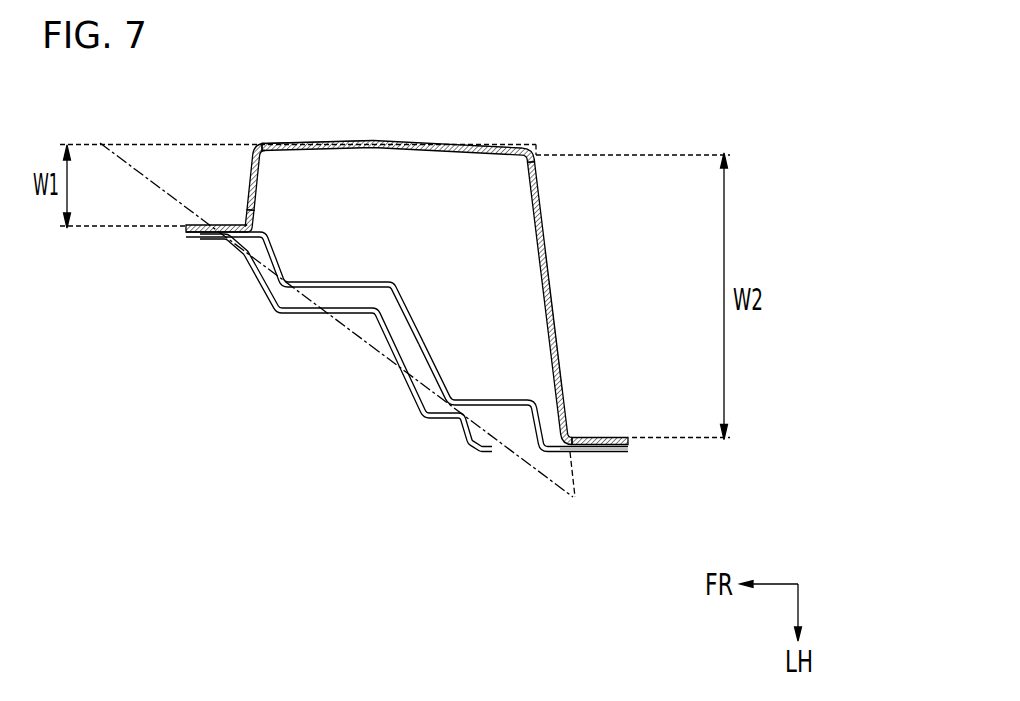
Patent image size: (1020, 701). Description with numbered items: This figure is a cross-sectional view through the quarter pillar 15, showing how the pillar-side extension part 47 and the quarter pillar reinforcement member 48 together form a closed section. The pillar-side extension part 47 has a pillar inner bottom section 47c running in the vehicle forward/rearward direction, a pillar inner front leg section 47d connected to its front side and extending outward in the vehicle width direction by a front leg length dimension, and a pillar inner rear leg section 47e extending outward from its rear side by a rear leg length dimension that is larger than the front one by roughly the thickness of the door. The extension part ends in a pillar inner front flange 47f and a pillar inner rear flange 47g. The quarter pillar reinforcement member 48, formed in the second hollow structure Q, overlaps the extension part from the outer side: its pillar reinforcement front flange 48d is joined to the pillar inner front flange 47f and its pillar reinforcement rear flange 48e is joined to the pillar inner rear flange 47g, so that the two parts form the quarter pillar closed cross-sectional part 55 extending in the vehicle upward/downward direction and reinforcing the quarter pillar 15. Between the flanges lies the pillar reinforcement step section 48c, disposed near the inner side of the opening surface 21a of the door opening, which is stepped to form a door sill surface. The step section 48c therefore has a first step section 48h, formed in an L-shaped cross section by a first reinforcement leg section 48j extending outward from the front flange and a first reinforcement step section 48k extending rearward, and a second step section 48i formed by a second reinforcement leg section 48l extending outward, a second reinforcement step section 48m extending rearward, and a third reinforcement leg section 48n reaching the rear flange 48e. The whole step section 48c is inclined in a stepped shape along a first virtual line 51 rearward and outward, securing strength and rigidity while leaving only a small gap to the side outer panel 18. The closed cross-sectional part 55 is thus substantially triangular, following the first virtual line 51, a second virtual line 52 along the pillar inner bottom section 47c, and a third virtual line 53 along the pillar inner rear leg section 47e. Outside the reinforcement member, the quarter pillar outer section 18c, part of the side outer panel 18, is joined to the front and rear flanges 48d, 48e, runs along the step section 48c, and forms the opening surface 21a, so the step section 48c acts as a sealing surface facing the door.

The quarter pillar 15 is at (452, 90).
The side outer panel 18 is at (530, 456).
The quarter pillar outer section 18c is at (447, 433).
The opening surface 21a is at (408, 345).
The pillar-side extension part 47 is at (390, 259).
The pillar inner bottom section 47c is at (376, 142).
The pillar inner front leg section 47d is at (247, 195).
The pillar inner rear leg section 47e is at (553, 287).
The pillar inner front flange 47f is at (197, 225).
The pillar inner rear flange 47g is at (593, 437).
The quarter pillar reinforcement member 48 is at (400, 433).
The pillar reinforcement step section 48c is at (377, 433).
The pillar reinforcement front flange 48d is at (200, 238).
The pillar reinforcement rear flange 48e is at (603, 451).
The first step section 48h is at (255, 408).
The second step section 48i is at (462, 433).
The first reinforcement leg section 48j is at (273, 256).
The first reinforcement step section 48k is at (296, 294).
The second reinforcement leg section 48l is at (421, 347).
The second reinforcement step section 48m is at (490, 404).
The third reinforcement leg section 48n is at (528, 467).
The first virtual line 51 is at (287, 310).
The second virtual line 52 is at (270, 143).
The third virtual line 53 is at (557, 327).
The quarter pillar closed cross-sectional part 55 is at (487, 150).
The second hollow structure Q is at (321, 143).